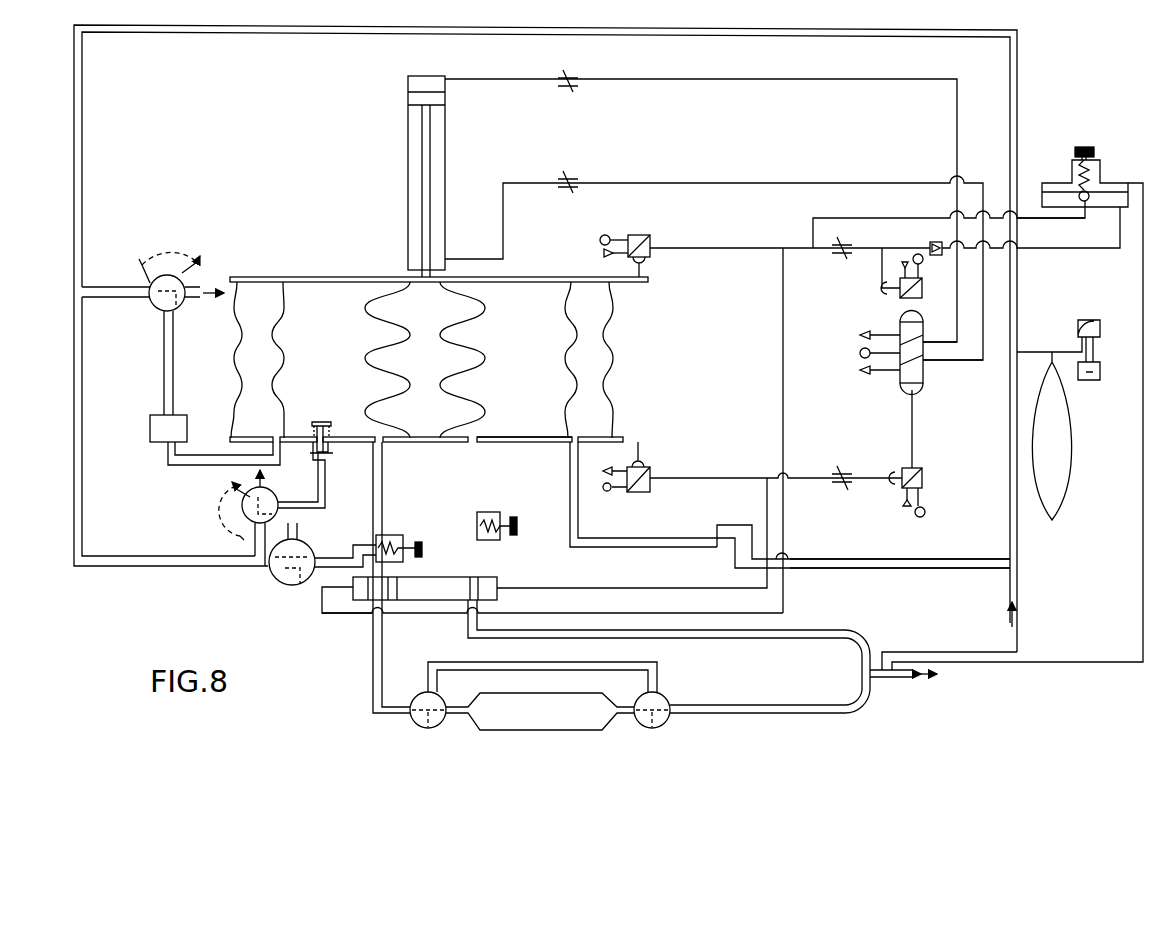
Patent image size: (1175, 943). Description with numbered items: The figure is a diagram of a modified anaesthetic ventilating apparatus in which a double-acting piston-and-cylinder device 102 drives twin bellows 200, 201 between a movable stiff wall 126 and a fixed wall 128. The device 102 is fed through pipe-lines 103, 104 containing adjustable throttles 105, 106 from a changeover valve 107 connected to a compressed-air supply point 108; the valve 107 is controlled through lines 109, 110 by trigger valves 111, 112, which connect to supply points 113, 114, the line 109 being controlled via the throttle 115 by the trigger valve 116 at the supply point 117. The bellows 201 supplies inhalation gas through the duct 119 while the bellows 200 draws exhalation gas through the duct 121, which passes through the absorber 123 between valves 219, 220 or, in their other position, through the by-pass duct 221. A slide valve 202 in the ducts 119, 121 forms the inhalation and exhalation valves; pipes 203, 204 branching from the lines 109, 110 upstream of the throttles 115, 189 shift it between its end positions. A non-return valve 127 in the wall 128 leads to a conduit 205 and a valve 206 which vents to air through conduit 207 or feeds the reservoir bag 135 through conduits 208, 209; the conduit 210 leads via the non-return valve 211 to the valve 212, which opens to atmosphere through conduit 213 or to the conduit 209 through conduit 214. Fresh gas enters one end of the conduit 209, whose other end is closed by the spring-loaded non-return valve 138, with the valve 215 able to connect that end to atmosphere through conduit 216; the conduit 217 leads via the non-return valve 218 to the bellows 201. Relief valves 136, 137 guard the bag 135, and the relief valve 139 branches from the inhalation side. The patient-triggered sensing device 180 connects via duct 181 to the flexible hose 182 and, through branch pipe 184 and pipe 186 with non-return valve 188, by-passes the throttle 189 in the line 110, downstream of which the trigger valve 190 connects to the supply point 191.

The double-acting piston-and-cylinder device 102 is at (406, 99).
The pipe-line 103 is at (520, 180).
The pipe-line 104 is at (481, 80).
The adjustable throttle 105 is at (578, 178).
The adjustable throttle 106 is at (578, 90).
The changeover valve 107 is at (925, 378).
The compressed-air supply point 108 is at (860, 353).
The line 109 is at (914, 436).
The line 110 is at (786, 246).
The trigger valve 111 is at (924, 474).
The trigger valve 112 is at (666, 226).
The compressed-air supply point 113 is at (926, 510).
The compressed-air supply point 114 is at (601, 237).
The throttle 115 is at (832, 464).
The trigger valve 116 is at (652, 466).
The compressed-air supply point 117 is at (607, 492).
The duct 119 is at (710, 640).
The duct 121 is at (696, 704).
The absorber 123 is at (575, 721).
The movable stiff wall 126 is at (514, 283).
The non-return valve 127 is at (316, 424).
The wall 128 is at (516, 436).
The reservoir bag 135 is at (1070, 455).
The relief valve 136 is at (1092, 380).
The relief valve 137 is at (1078, 322).
The spring-loaded non-return valve 138 is at (386, 534).
The spring-loaded non-return valve 139 is at (490, 511).
The sensing device 180 is at (1102, 170).
The duct 181 is at (1076, 652).
The flexible hose 182 is at (886, 664).
The branch pipe 184 is at (1072, 222).
The pipe 186 is at (1076, 254).
The non-return valve 188 is at (934, 240).
The throttle 189 is at (840, 258).
The trigger valve 190 is at (895, 292).
The compressed-air supply point 191 is at (914, 258).
The bellows 200 is at (405, 378).
The bellows 201 is at (614, 366).
The slide valve 202 is at (446, 566).
The pipe 203 is at (786, 604).
The pipe 204 is at (692, 588).
The conduit 205 is at (326, 490).
The three-port two-way valve 206 is at (270, 496).
The conduit 207 is at (230, 486).
The conduit 208 is at (252, 538).
The conduit 209 is at (1020, 82).
The conduit 210 is at (162, 362).
The non-return valve 211 is at (150, 420).
The three-port two-way valve 212 is at (152, 305).
The conduit 213 is at (198, 302).
The conduit 214 is at (108, 285).
The three-port two-way valve 215 is at (275, 582).
The conduit 216 is at (300, 528).
The conduit 217 is at (890, 570).
The non-return valve 218 is at (736, 528).
The three-port two-way valve 219 is at (668, 722).
The three-port two-way valve 220 is at (414, 720).
The by-pass duct 221 is at (600, 664).